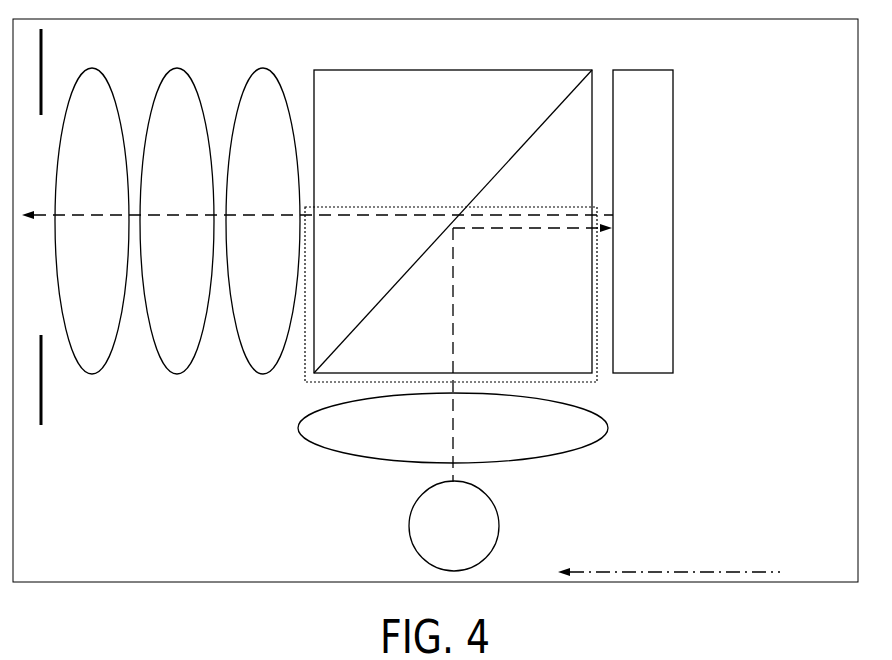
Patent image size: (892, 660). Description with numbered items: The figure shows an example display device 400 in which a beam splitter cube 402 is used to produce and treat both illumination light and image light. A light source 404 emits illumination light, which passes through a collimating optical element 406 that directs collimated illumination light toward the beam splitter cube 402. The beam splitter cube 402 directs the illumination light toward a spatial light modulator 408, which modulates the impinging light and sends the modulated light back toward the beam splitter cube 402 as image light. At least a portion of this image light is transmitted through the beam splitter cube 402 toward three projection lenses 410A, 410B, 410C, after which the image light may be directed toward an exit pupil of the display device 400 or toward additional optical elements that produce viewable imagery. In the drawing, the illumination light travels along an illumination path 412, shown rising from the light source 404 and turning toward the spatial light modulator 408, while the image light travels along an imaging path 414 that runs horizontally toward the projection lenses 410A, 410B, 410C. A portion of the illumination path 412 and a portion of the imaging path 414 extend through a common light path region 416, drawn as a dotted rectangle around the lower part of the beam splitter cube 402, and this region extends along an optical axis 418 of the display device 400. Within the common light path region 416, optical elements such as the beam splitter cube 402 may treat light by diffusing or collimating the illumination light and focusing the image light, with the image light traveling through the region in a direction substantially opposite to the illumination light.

The display device 400 is at (694, 112).
The beam splitter cube 402 is at (453, 70).
The light source 404 is at (454, 526).
The collimating optical element 406 is at (607, 429).
The spatial light modulator 408 is at (643, 221).
The projection lens 410A is at (278, 78).
The projection lens 410B is at (192, 78).
The projection lens 410C is at (107, 78).
The illumination path 412 is at (538, 243).
The imaging path 414 is at (330, 229).
The common light path region 416 is at (341, 207).
The optical axis 418 is at (777, 572).